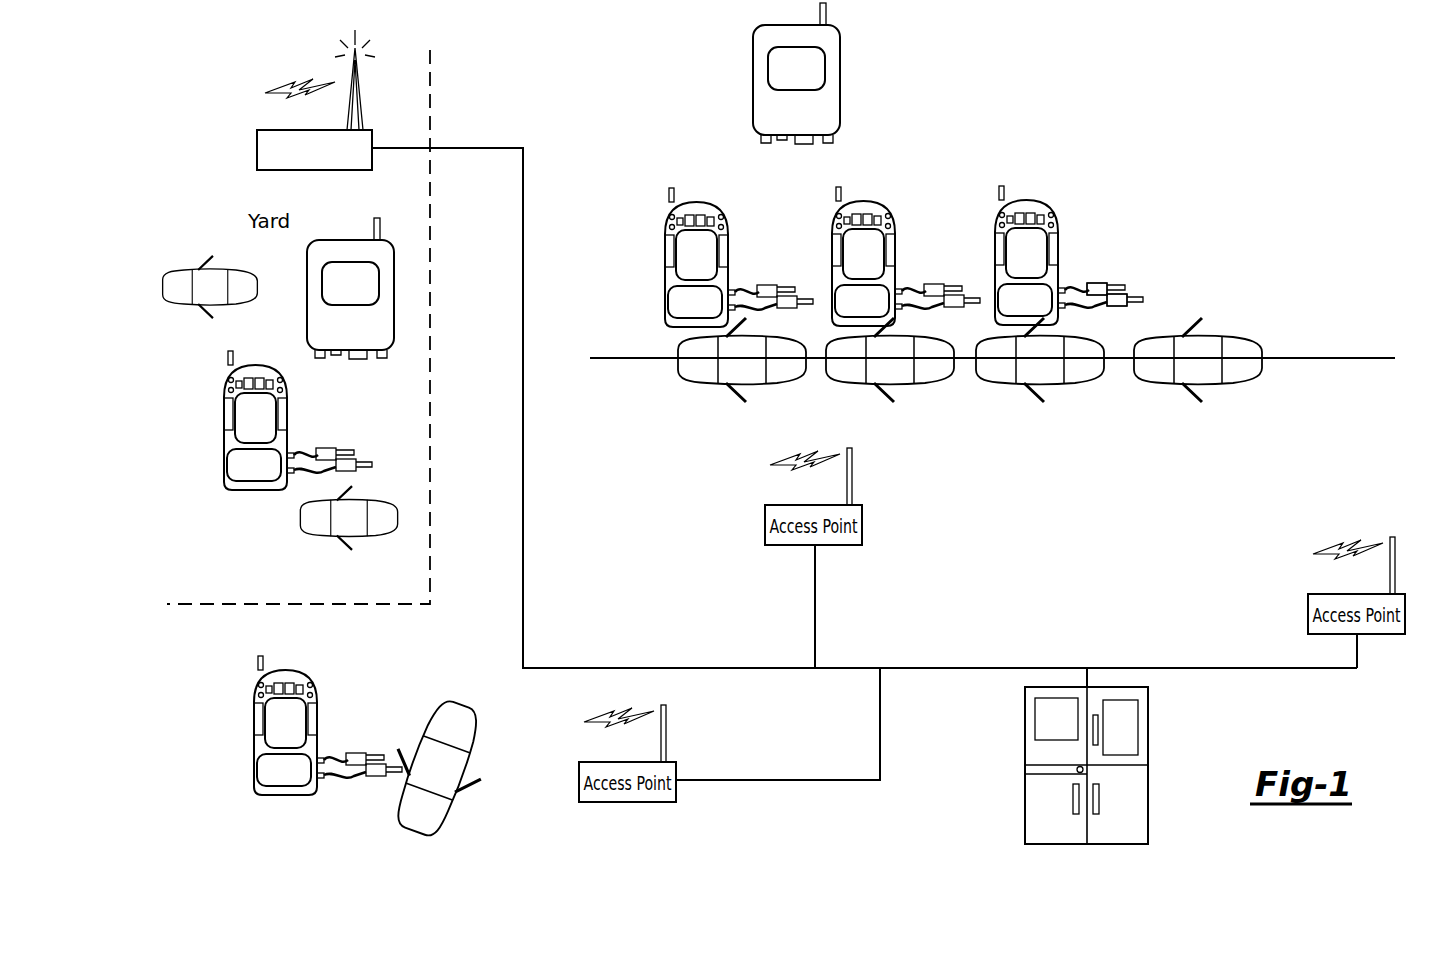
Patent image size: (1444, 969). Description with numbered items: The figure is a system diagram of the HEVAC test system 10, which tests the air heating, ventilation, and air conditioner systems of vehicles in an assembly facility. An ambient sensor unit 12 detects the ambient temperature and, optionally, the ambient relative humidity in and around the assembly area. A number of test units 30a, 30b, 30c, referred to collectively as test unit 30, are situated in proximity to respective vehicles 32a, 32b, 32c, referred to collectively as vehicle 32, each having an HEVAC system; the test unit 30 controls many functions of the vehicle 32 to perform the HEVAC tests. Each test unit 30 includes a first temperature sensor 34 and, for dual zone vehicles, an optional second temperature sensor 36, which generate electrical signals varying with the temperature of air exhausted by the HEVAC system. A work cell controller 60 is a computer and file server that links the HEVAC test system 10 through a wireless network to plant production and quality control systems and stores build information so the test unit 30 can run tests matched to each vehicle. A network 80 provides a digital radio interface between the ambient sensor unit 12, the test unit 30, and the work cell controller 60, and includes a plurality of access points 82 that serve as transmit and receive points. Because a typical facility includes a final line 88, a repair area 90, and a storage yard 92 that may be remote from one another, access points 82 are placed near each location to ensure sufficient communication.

The HEVAC test system 10 is at (1193, 155).
The ambient sensor unit 12 is at (848, 88).
The test unit 30 is at (298, 413).
The test unit 30a is at (733, 214).
The test unit 30b is at (899, 211).
The test unit 30c is at (1061, 211).
The vehicle 32 is at (228, 305).
The vehicle 32a is at (752, 385).
The vehicle 32b is at (900, 385).
The vehicle 32c is at (1050, 385).
The first temperature sensor 34 is at (1098, 282).
The second temperature sensor 36 is at (1116, 306).
The work cell controller 60 is at (1007, 757).
The network 80 is at (530, 597).
The access point 82 is at (257, 152).
The final line 88 is at (1234, 243).
The repair area 90 is at (378, 737).
The storage yard 92 is at (447, 118).